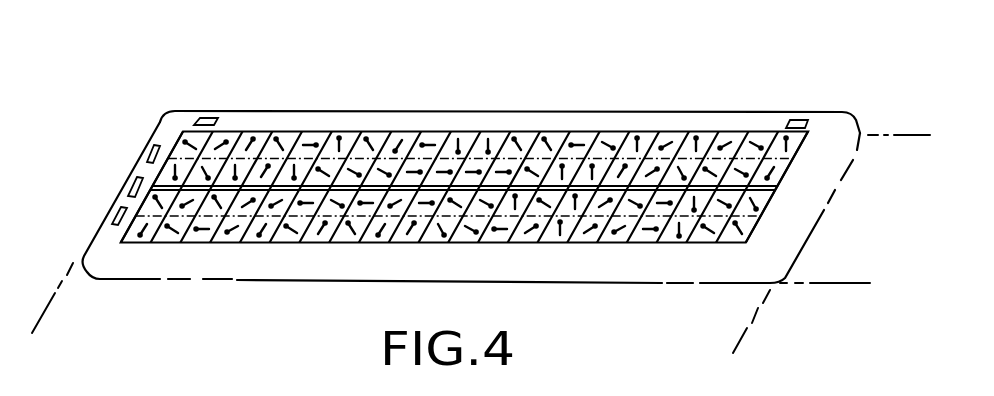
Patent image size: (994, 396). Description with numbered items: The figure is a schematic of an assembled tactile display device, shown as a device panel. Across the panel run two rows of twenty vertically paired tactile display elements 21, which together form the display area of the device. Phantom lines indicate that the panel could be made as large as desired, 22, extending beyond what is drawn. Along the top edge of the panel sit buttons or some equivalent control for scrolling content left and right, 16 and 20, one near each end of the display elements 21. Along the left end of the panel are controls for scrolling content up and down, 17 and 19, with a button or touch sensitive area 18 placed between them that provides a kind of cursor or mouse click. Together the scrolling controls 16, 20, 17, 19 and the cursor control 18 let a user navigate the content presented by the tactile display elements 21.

The scroll control button 16 is at (197, 120).
The scroll control button 17 is at (147, 147).
The cursor button or touch sensitive area 18 is at (132, 184).
The scroll control button 19 is at (114, 215).
The scroll control button 20 is at (802, 120).
The vertically paired tactile display elements 21 is at (437, 131).
The panel extension 22 is at (863, 290).